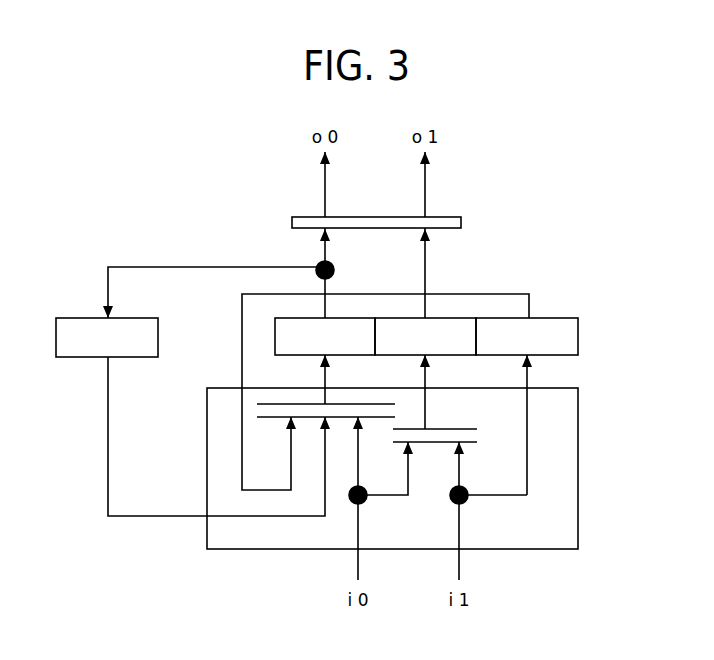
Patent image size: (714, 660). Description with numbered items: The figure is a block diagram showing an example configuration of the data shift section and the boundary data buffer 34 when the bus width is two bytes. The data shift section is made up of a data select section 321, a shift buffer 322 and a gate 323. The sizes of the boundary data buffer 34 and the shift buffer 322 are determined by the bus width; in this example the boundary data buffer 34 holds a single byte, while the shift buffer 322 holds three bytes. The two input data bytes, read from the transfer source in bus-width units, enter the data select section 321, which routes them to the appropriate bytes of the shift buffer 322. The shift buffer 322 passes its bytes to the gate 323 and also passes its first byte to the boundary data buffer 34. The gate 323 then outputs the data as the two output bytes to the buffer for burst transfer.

The boundary data buffer 34 is at (137, 318).
The data select section 321 is at (562, 389).
The shift buffer 322 is at (565, 318).
The gate 323 is at (445, 212).